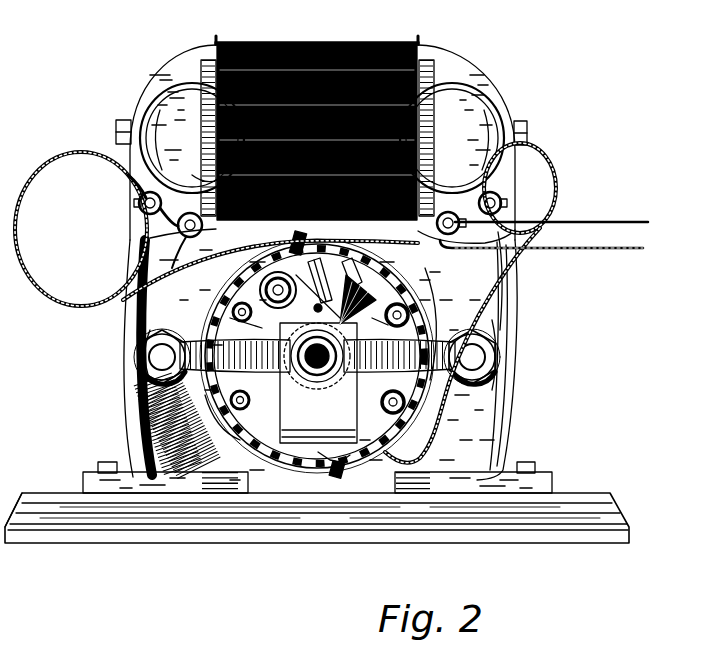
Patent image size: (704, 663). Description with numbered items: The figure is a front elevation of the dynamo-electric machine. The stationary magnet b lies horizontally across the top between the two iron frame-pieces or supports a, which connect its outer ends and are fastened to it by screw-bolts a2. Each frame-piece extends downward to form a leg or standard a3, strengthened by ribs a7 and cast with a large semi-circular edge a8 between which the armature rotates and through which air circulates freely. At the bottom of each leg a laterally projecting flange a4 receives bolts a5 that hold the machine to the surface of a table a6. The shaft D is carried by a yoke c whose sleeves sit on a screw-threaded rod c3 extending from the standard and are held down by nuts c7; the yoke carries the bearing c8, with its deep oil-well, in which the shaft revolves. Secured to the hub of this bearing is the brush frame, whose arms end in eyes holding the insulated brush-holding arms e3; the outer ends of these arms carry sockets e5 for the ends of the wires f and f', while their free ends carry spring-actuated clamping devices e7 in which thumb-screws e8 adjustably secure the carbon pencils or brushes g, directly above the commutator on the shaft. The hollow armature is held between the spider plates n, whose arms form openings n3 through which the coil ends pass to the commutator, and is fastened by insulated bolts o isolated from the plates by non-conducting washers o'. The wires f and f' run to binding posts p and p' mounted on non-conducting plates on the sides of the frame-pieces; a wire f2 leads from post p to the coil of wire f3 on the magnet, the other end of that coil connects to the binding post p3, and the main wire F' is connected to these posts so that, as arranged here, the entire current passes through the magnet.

The stationary magnet b is at (314, 44).
The frame-pieces or supports a is at (153, 90).
The screw-bolts a2 is at (117, 128).
The legs or standards a3 is at (132, 352).
The laterally projecting flanges a4 is at (84, 477).
The bolts a5 is at (106, 462).
The table a6 is at (330, 545).
The strengthening ribs a7 is at (126, 380).
The large semi-circular edges a8 is at (418, 290).
The yoke c is at (317, 356).
The screw-threaded rod c3 is at (163, 345).
The nuts c7 is at (176, 384).
The bearing c8 is at (310, 388).
The shaft D is at (317, 356).
The brush-holding arms e3 is at (300, 288).
The sockets e5 is at (344, 478).
The spring-actuated clamping devices e7 is at (320, 260).
The thumb-screws e8 is at (356, 262).
The wire f is at (81, 229).
The wire f' is at (470, 303).
The wire f2 is at (176, 265).
The coil of wire f3 is at (197, 168).
The brushes g is at (296, 244).
The spider plates or bearings n is at (291, 324).
The openings n3 is at (359, 297).
The insulated bolts o is at (328, 356).
The washers o' is at (407, 270).
The binding post p is at (132, 202).
The binding post p' is at (505, 196).
The binding post p3 is at (456, 220).
The main wire F' is at (544, 242).